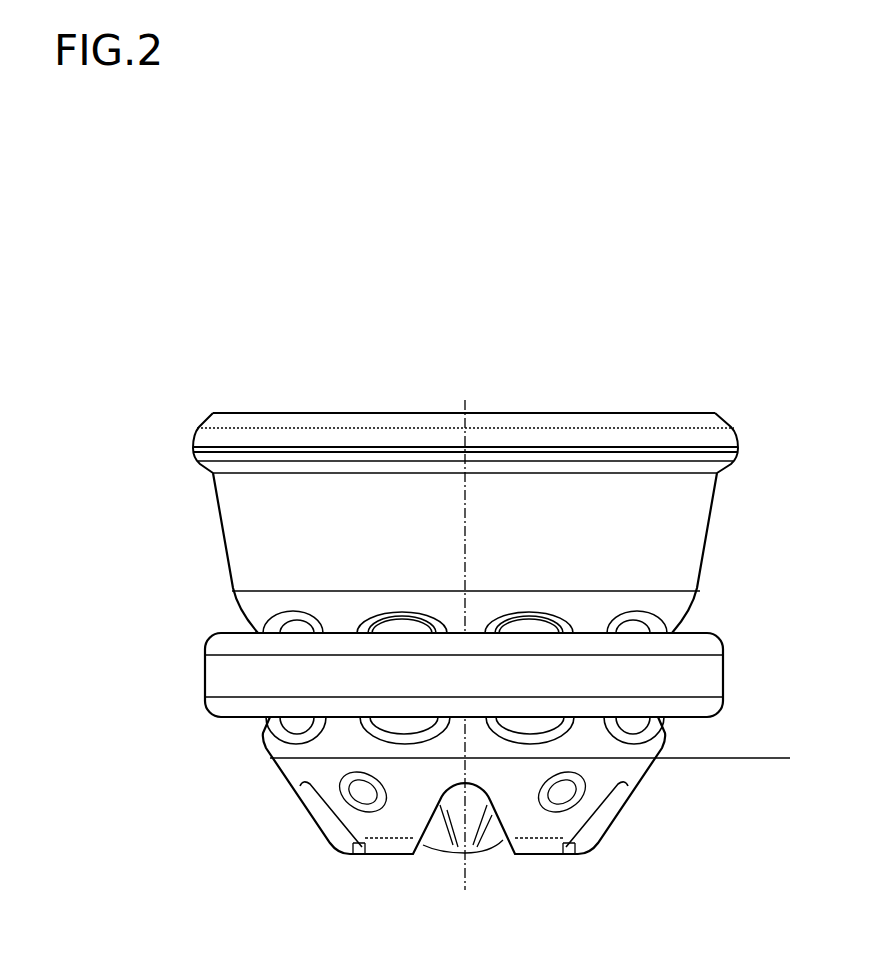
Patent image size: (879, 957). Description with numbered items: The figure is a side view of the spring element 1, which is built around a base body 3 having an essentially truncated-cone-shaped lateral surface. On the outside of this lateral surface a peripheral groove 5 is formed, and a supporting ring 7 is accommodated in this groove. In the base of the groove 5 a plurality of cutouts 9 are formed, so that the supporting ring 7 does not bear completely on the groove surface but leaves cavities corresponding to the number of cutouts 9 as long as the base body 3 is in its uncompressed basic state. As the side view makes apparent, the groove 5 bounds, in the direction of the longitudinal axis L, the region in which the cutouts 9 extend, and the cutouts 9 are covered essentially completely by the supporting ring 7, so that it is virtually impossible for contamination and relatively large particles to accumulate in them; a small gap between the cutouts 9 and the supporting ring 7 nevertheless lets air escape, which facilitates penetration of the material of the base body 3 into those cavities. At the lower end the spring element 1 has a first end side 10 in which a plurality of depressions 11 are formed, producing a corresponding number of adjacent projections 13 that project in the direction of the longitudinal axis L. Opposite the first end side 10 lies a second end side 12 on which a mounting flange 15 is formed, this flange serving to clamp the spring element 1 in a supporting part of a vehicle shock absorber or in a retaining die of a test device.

The spring element 1 is at (246, 368).
The base body 3 is at (240, 551).
The peripheral groove 5 is at (222, 620).
The supporting ring 7 is at (215, 683).
The cutouts 9 is at (298, 624).
The first end side 10 is at (535, 856).
The depressions 11 is at (470, 804).
The second end side 12 is at (396, 389).
The projections 13 is at (387, 856).
The mounting flange 15 is at (196, 440).
The longitudinal axis L is at (465, 402).